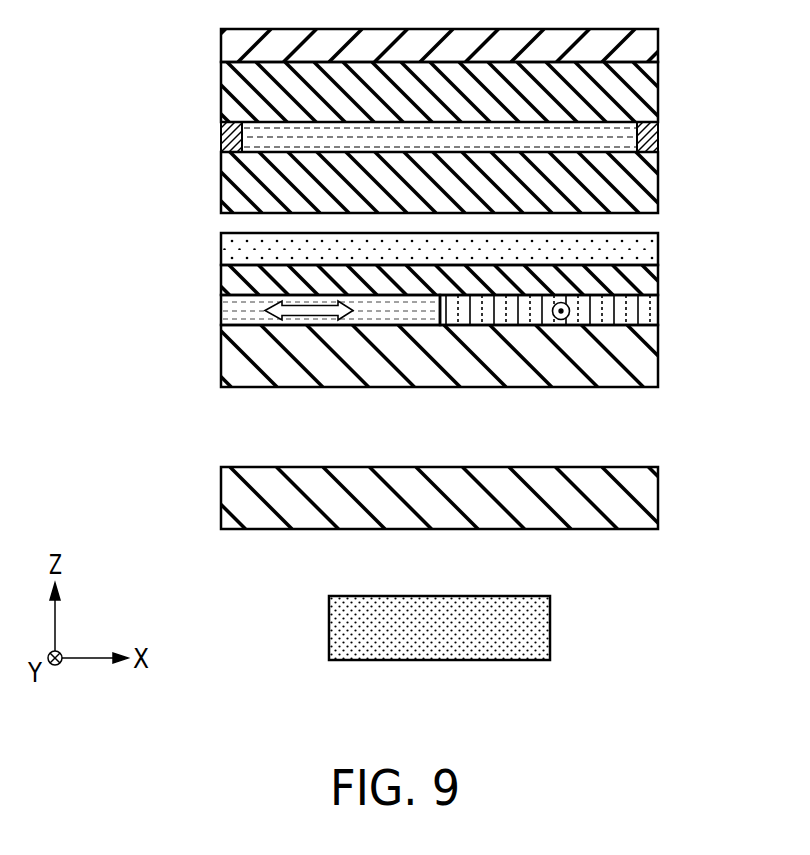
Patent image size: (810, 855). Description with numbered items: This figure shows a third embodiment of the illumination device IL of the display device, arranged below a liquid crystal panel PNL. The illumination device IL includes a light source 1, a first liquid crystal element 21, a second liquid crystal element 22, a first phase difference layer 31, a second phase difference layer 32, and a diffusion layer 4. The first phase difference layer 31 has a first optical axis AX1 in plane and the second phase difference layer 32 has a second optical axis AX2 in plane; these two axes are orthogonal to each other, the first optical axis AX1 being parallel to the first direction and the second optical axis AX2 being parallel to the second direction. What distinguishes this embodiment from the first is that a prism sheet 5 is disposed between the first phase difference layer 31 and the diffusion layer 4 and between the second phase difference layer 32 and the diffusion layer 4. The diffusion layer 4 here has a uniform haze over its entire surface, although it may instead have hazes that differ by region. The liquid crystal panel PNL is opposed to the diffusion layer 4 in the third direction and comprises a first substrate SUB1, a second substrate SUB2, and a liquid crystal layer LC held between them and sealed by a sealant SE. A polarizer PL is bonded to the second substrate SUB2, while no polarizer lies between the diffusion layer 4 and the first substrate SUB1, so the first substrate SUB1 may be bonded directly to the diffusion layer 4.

The polarizer PL is at (238, 44).
The liquid crystal panel PNL is at (433, 132).
The second substrate SUB2 is at (648, 75).
The liquid crystal layer LC is at (645, 115).
The sealant SE is at (655, 142).
The first substrate SUB1 is at (648, 190).
The illumination device IL is at (463, 457).
The diffusion layer 4 is at (232, 245).
The prism sheet 5 is at (650, 288).
The first phase difference layer 31 is at (232, 307).
The second phase difference layer 32 is at (648, 315).
The first optical axis AX1 is at (298, 313).
The second optical axis AX2 is at (561, 320).
The second liquid crystal element 22 is at (232, 350).
The first liquid crystal element 21 is at (232, 500).
The light source 1 is at (335, 627).